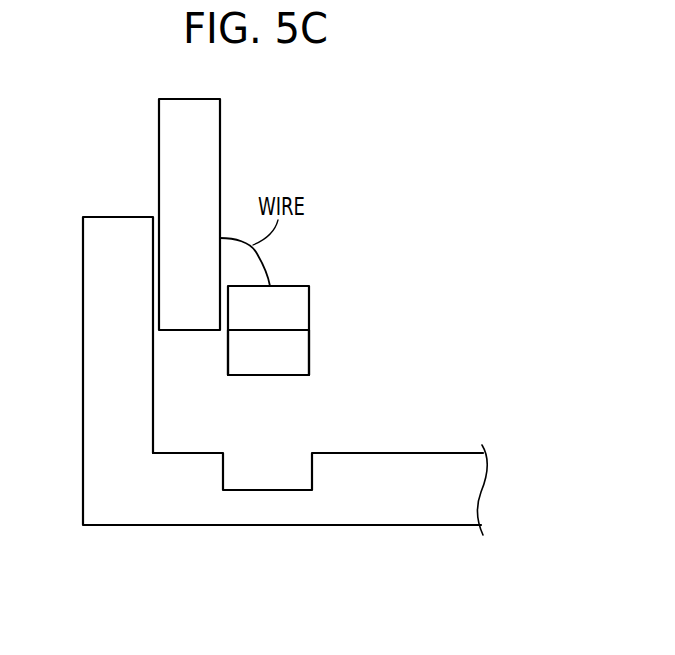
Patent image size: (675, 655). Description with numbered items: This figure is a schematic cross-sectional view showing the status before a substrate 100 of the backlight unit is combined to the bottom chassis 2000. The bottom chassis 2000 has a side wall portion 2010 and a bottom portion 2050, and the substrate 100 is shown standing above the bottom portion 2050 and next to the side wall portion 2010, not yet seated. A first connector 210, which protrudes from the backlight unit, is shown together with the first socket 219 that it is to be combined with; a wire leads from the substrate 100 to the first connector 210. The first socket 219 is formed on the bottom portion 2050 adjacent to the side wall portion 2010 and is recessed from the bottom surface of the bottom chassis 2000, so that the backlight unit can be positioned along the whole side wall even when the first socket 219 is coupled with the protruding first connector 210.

The substrate 100 is at (200, 139).
The first connector 210 is at (300, 305).
The first socket 219 is at (300, 350).
The bottom chassis 2000 is at (285, 414).
The side wall portion 2010 is at (122, 417).
The bottom portion 2050 is at (320, 512).